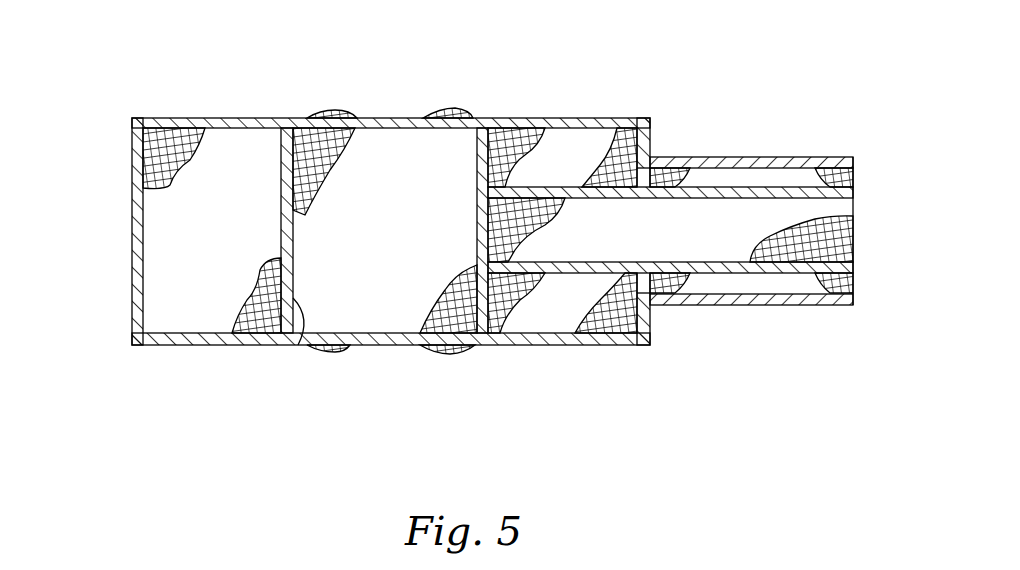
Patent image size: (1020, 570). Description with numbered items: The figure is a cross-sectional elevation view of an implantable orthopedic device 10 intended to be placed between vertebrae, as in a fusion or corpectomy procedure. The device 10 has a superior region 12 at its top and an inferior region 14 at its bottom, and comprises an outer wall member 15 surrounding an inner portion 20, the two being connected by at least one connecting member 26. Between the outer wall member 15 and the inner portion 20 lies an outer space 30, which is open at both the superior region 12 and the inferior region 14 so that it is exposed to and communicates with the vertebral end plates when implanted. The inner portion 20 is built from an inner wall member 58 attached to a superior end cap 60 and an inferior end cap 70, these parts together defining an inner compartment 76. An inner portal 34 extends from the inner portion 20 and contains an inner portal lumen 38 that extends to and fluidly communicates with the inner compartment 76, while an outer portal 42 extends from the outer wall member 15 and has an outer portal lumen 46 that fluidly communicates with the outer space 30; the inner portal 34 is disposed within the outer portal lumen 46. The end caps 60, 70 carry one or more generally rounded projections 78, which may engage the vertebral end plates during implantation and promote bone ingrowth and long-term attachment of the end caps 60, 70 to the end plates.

The implantable orthopedic device 10 is at (770, 51).
The superior region 12 is at (133, 126).
The inferior region 14 is at (132, 338).
The outer wall member 15 is at (128, 234).
The inner portion 20 is at (279, 171).
The connecting member 26 is at (203, 118).
The outer space 30 is at (556, 150).
The inner portal 34 is at (773, 278).
The inner portal lumen 38 is at (855, 235).
The outer portal 42 is at (831, 310).
The outer portal lumen 46 is at (855, 176).
The inner wall member 58 is at (292, 346).
The superior end cap 60 is at (380, 120).
The inferior end cap 70 is at (378, 347).
The inner compartment 76 is at (392, 320).
The projections 78 is at (335, 115).